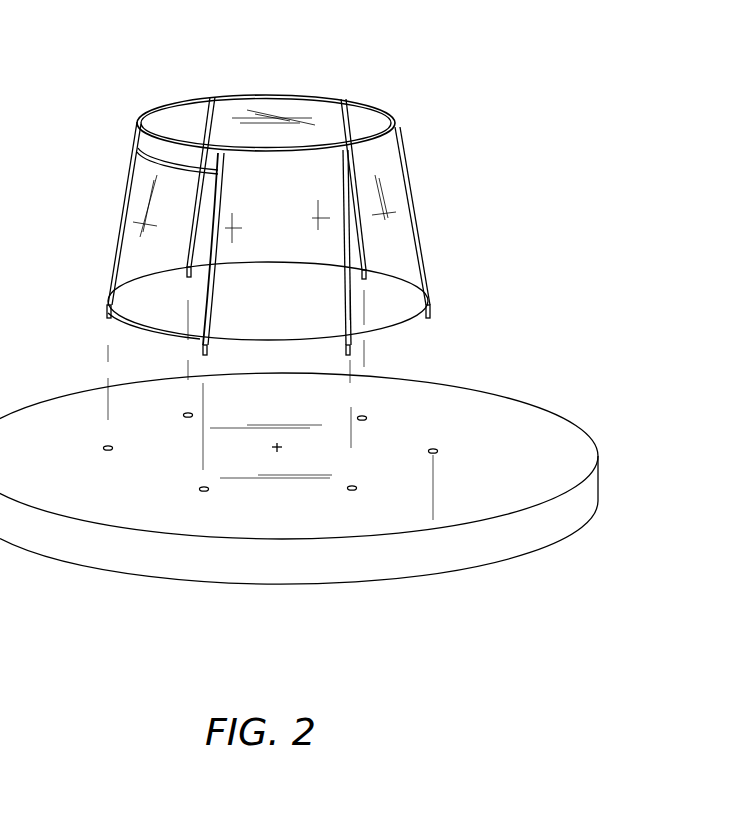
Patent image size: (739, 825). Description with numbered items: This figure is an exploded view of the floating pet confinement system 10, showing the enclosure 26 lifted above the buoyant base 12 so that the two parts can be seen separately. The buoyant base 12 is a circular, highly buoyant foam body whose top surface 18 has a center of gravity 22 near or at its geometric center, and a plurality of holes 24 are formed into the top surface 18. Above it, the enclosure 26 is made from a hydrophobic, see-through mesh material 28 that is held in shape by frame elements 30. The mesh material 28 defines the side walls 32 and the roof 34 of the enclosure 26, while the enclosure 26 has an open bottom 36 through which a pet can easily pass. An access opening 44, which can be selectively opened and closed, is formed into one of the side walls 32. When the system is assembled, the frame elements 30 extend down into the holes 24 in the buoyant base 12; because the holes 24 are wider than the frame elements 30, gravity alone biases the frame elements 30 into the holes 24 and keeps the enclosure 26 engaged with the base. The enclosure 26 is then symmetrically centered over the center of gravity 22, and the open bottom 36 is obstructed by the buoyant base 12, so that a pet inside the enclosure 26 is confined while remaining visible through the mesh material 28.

The floating pet confinement system 10 is at (113, 82).
The buoyant base 12 is at (500, 420).
The top surface 18 is at (175, 463).
The center of gravity 22 is at (275, 448).
The holes 24 is at (365, 420).
The enclosure 26 is at (388, 113).
The mesh material 28 is at (390, 160).
The frame elements 30 is at (430, 317).
The side walls 32 is at (305, 275).
The roof 34 is at (285, 104).
The open bottom 36 is at (140, 325).
The access opening 44 is at (138, 262).